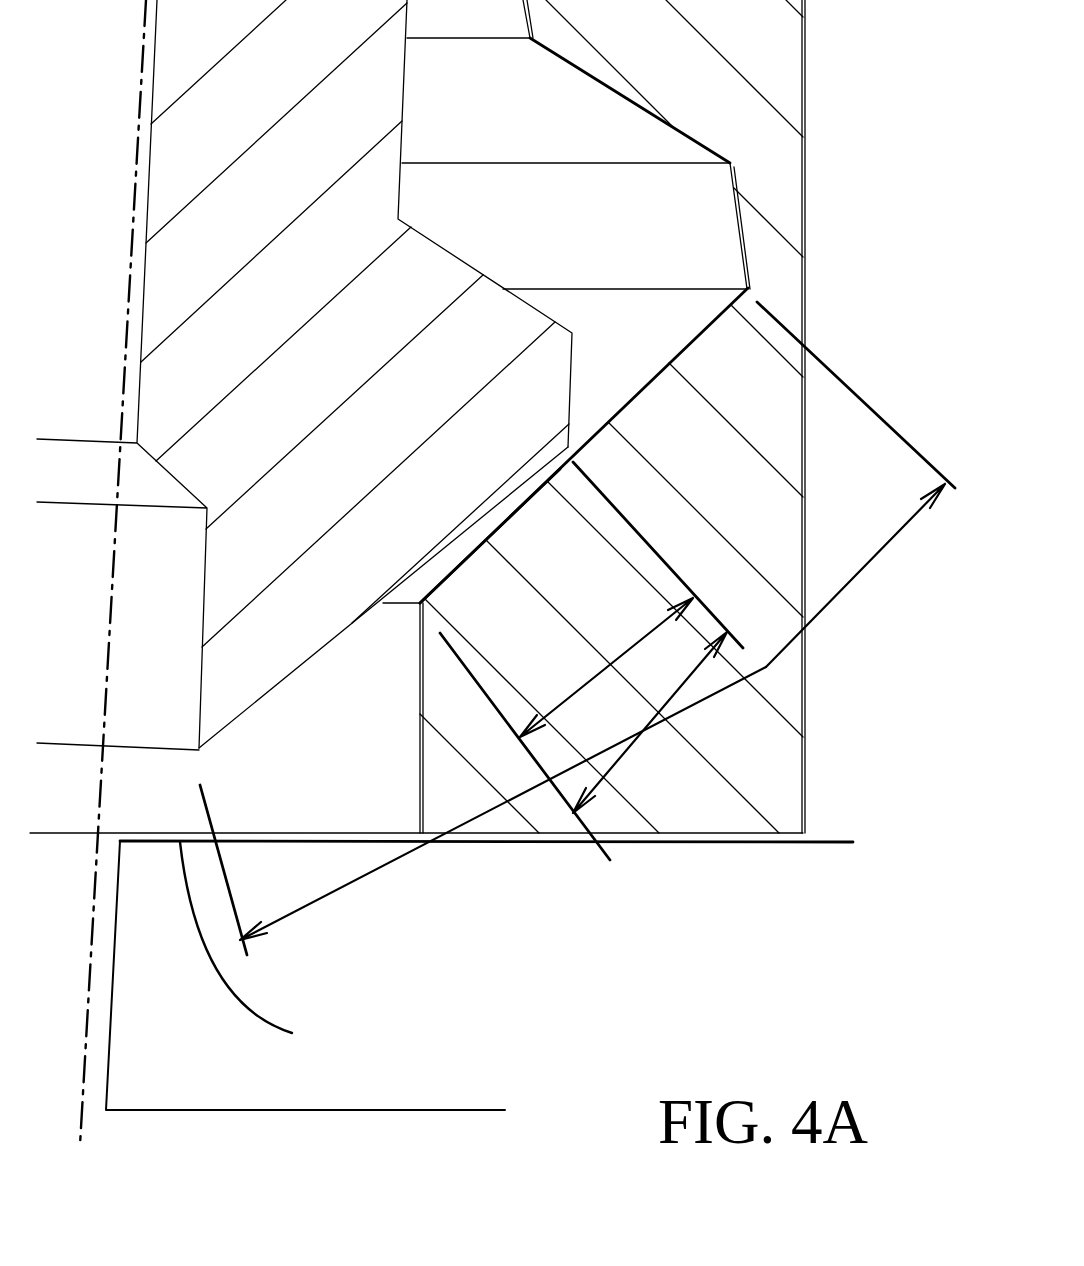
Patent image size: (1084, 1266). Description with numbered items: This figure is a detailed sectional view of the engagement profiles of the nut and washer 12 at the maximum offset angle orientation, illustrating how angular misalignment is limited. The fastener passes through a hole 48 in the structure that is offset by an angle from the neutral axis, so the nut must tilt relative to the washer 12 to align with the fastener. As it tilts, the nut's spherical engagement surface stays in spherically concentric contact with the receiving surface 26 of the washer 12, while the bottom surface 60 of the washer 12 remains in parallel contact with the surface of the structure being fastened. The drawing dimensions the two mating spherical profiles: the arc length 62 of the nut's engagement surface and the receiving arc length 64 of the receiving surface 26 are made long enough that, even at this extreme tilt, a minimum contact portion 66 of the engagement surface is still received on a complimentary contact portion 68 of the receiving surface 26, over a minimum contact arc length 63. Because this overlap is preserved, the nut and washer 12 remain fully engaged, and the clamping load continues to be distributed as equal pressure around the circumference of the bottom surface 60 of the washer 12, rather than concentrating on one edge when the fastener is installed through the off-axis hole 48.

The washer 12 is at (777, 782).
The receiving surface 26 is at (652, 370).
The hole 48 is at (115, 958).
The bottom surface 60 is at (836, 843).
The arc length 62 is at (373, 877).
The minimum contact arc length 63 is at (605, 675).
The receiving arc length 64 is at (840, 598).
The minimum contact portion 66 is at (453, 543).
The complimentary contact portion 68 is at (510, 527).